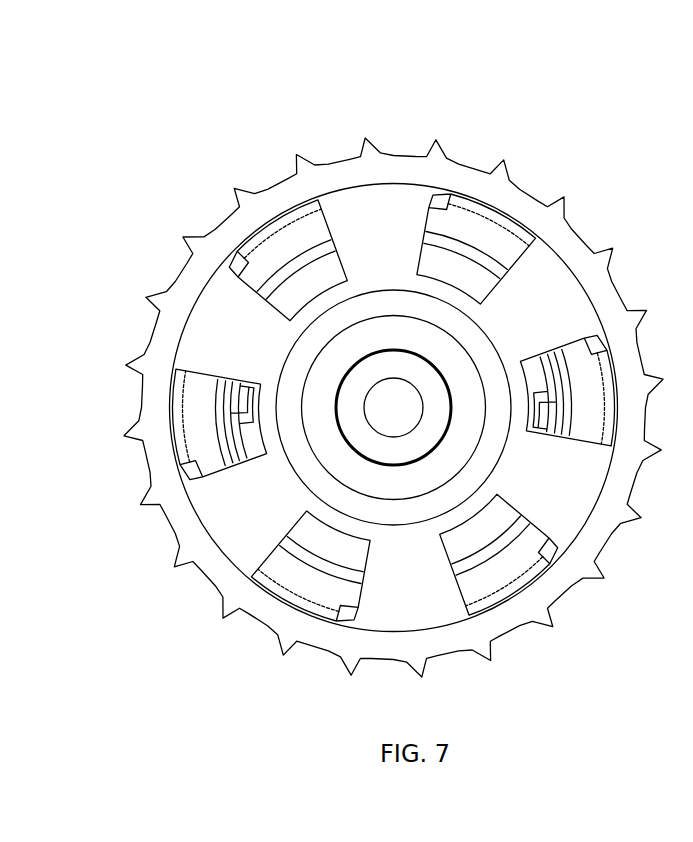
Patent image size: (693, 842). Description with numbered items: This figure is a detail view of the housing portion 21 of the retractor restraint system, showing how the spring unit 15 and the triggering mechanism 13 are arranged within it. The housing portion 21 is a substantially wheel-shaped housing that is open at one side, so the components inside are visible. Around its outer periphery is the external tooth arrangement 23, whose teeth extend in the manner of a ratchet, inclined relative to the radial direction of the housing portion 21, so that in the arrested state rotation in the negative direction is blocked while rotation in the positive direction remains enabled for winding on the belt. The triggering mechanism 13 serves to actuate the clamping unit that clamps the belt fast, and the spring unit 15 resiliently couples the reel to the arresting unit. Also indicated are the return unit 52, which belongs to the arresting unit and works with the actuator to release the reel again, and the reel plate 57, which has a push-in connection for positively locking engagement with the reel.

The triggering mechanism 13 is at (466, 254).
The spring unit 15 is at (515, 580).
The housing portion 21 is at (213, 335).
The external tooth arrangement 23 is at (600, 275).
The return unit 52 is at (310, 587).
The reel plate 57 is at (300, 290).